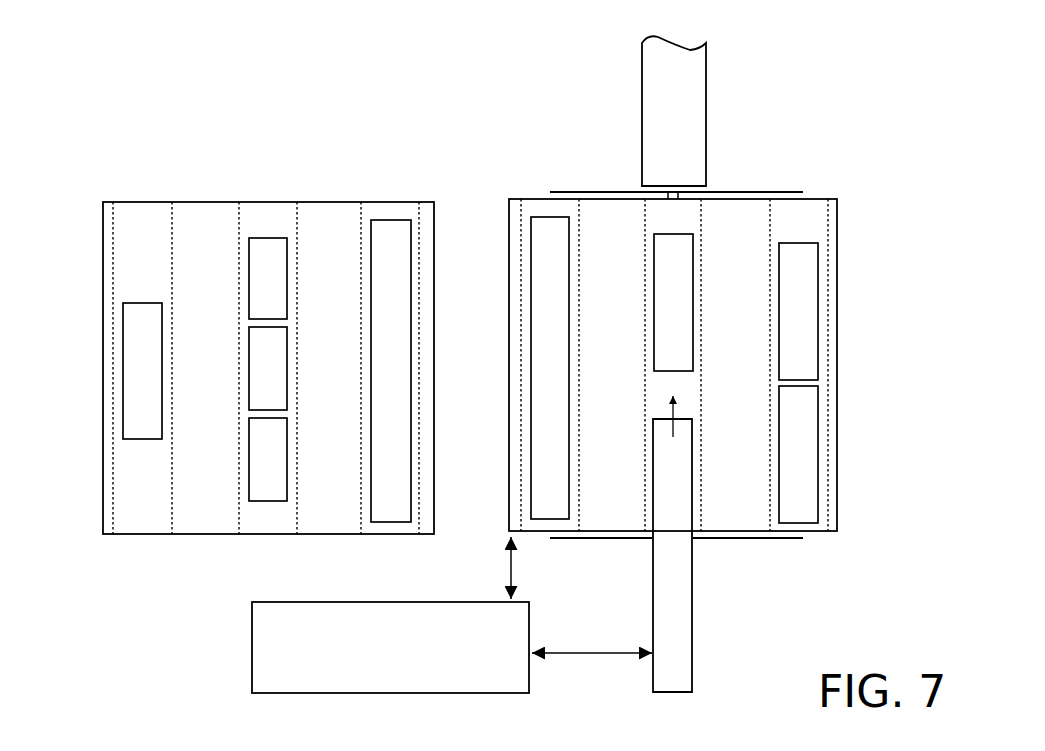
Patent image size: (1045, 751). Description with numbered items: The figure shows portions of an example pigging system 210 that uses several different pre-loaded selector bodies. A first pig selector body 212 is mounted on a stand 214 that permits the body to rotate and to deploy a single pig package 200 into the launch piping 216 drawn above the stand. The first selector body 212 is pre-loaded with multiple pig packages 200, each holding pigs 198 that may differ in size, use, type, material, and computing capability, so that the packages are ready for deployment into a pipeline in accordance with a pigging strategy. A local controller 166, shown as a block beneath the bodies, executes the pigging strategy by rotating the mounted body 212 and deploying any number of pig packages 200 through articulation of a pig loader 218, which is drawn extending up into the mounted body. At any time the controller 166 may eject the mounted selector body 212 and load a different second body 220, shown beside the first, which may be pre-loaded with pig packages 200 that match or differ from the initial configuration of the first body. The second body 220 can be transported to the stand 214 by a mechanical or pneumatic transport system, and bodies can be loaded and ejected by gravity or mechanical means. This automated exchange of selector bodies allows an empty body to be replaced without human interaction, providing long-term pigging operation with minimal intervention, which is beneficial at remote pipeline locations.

The pigging system 210 is at (135, 65).
The second selector body 220 is at (103, 203).
The first pig selector body 212 is at (838, 203).
The stand 214 is at (600, 183).
The launch piping 216 is at (706, 90).
The pig loader 218 is at (692, 627).
The pigs 198 is at (249, 310).
The pig packages 200 is at (114, 386).
The local controller 166 is at (415, 659).